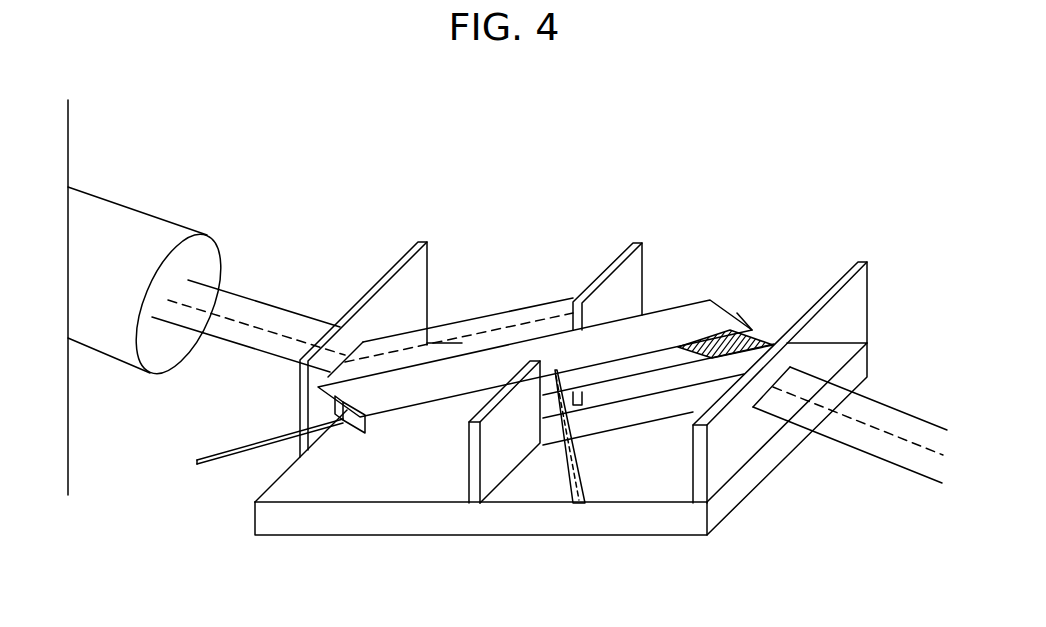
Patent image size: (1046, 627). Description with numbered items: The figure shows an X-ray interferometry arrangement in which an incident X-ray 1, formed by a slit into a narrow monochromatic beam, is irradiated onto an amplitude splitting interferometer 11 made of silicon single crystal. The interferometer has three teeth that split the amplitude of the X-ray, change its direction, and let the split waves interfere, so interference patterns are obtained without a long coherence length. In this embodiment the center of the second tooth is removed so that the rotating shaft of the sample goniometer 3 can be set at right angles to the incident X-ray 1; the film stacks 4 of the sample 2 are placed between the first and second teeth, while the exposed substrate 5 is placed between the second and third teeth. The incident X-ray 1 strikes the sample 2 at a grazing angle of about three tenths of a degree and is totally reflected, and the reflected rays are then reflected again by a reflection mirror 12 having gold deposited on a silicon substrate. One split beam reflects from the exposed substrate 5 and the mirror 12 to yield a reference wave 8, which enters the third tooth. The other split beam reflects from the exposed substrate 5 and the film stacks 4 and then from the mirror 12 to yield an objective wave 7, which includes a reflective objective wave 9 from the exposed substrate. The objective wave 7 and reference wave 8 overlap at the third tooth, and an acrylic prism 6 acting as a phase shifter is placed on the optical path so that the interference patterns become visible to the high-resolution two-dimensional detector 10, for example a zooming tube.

The incident X-ray 1 is at (913, 455).
The sample 2 is at (378, 424).
The sample goniometer 3 is at (260, 452).
The film stacks 4 is at (753, 330).
The exposed substrate 5 is at (610, 368).
The acrylic prism 6 is at (573, 468).
The objective wave 7 is at (557, 303).
The reference wave 8 is at (455, 435).
The reflective objective wave from the exposed substrate 9 is at (516, 330).
The high-resolution two-dimensional detector 10 is at (205, 253).
The amplitude splitting interferometer 11 is at (311, 522).
The reflection mirror 12 is at (690, 314).